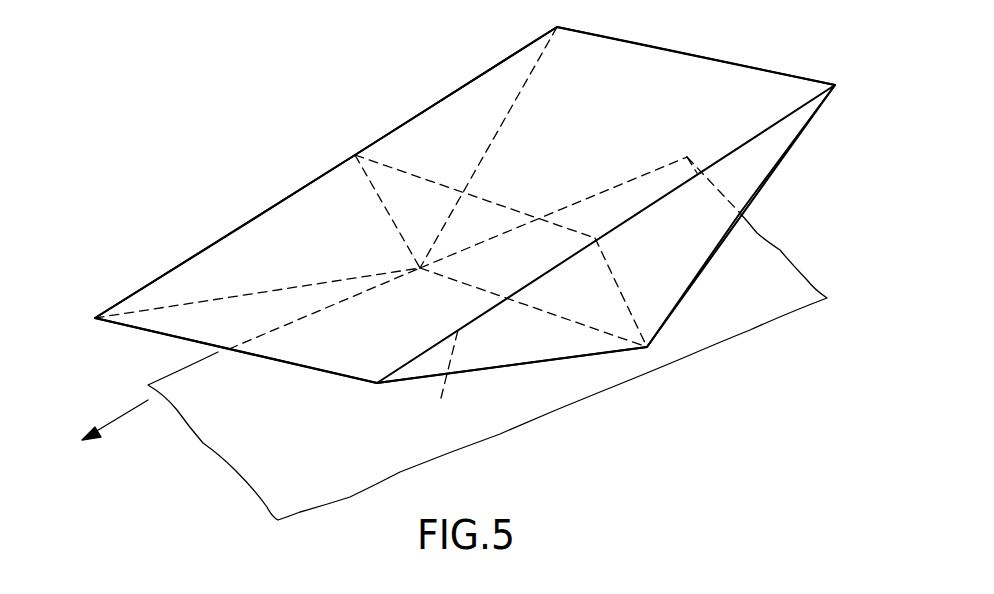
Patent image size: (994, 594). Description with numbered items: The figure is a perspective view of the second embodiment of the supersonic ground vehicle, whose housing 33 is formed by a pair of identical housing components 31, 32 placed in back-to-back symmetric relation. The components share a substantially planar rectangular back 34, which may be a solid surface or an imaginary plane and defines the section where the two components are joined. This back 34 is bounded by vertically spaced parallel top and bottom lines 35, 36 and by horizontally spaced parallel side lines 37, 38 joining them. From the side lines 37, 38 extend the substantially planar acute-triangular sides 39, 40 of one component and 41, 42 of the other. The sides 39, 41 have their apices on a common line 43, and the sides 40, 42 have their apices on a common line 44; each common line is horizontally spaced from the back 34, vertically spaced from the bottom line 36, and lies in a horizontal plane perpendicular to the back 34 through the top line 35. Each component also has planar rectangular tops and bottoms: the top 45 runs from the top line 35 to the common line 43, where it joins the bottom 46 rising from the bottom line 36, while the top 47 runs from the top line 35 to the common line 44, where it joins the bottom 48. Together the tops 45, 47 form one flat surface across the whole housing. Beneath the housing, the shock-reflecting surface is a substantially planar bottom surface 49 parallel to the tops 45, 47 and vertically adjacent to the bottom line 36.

The housing component 31 is at (493, 348).
The housing component 32 is at (698, 237).
The housing 33 is at (888, 95).
The back 34 is at (588, 284).
The top line 35 is at (510, 207).
The bottom line 36 is at (480, 292).
The side line 37 is at (385, 208).
The side line 38 is at (613, 257).
The side 39 is at (267, 247).
The side 40 is at (453, 110).
The side 41 is at (540, 342).
The side 42 is at (763, 172).
The common line 43 is at (288, 365).
The common line 44 is at (703, 57).
The top 45 is at (197, 277).
The bottom 46 is at (444, 379).
The top 47 is at (603, 50).
The bottom 48 is at (580, 90).
The bottom surface 49 is at (388, 447).